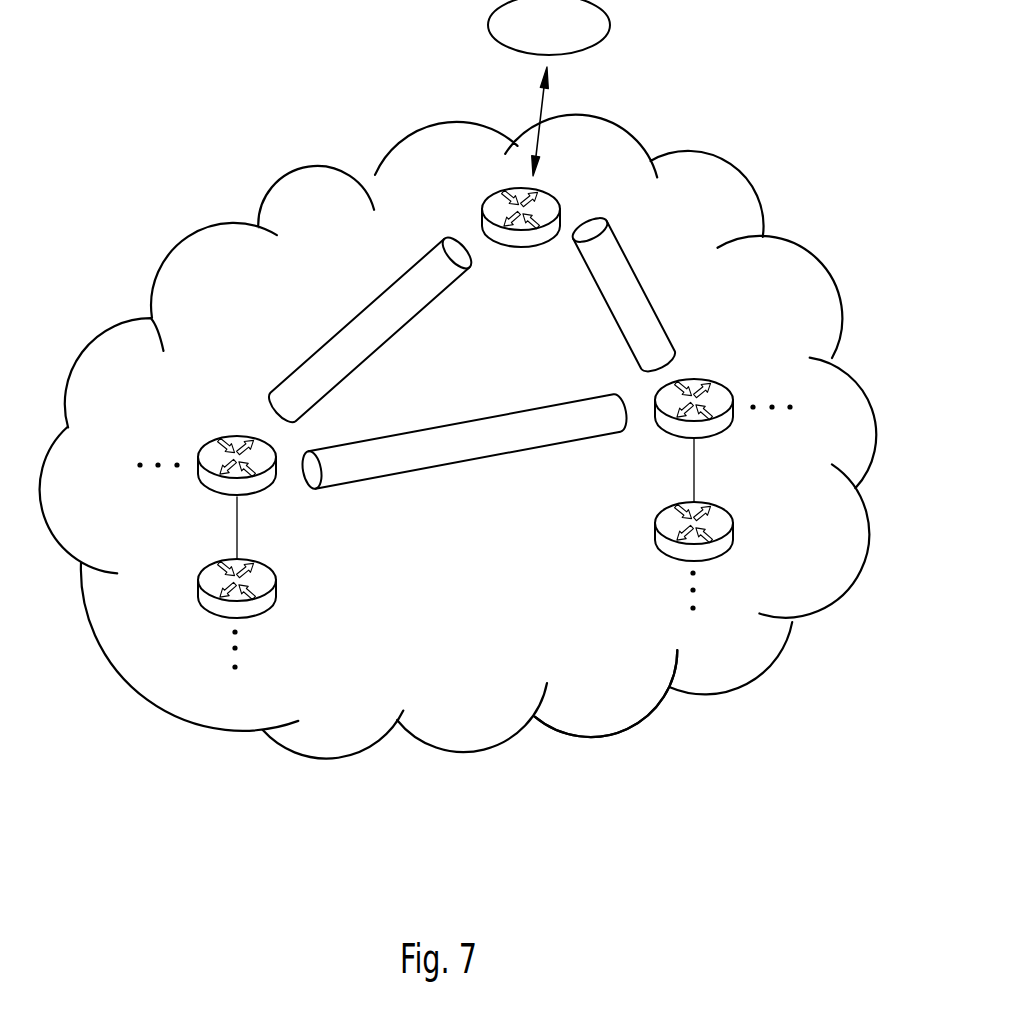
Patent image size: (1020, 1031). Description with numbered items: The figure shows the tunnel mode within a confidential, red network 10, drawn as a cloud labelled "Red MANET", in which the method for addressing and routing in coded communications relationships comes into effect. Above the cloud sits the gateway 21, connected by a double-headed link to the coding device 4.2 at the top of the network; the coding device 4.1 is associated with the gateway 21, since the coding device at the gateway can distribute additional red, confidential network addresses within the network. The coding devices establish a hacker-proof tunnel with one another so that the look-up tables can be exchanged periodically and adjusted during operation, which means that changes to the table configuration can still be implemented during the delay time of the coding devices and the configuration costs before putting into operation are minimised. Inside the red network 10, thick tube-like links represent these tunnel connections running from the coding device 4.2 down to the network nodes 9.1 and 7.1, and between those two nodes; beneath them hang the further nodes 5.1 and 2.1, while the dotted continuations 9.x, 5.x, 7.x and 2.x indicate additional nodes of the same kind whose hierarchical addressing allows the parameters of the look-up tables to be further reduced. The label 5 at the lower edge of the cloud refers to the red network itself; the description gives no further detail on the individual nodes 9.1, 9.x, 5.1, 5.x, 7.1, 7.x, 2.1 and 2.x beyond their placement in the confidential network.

The gateway 21 is at (612, 23).
The coding device 4.1 is at (521, 117).
The coding device 4.2 is at (533, 204).
The red, confidential network 10 is at (832, 282).
The red MANET 5 is at (612, 703).
The router 9.1 is at (237, 445).
The further routers 9.x is at (157, 446).
The router 5.1 is at (217, 588).
The further routers 5.x is at (262, 648).
The router 7.1 is at (696, 389).
The further routers 7.x is at (772, 388).
The router 2.1 is at (714, 531).
The further routers 2.x is at (666, 590).